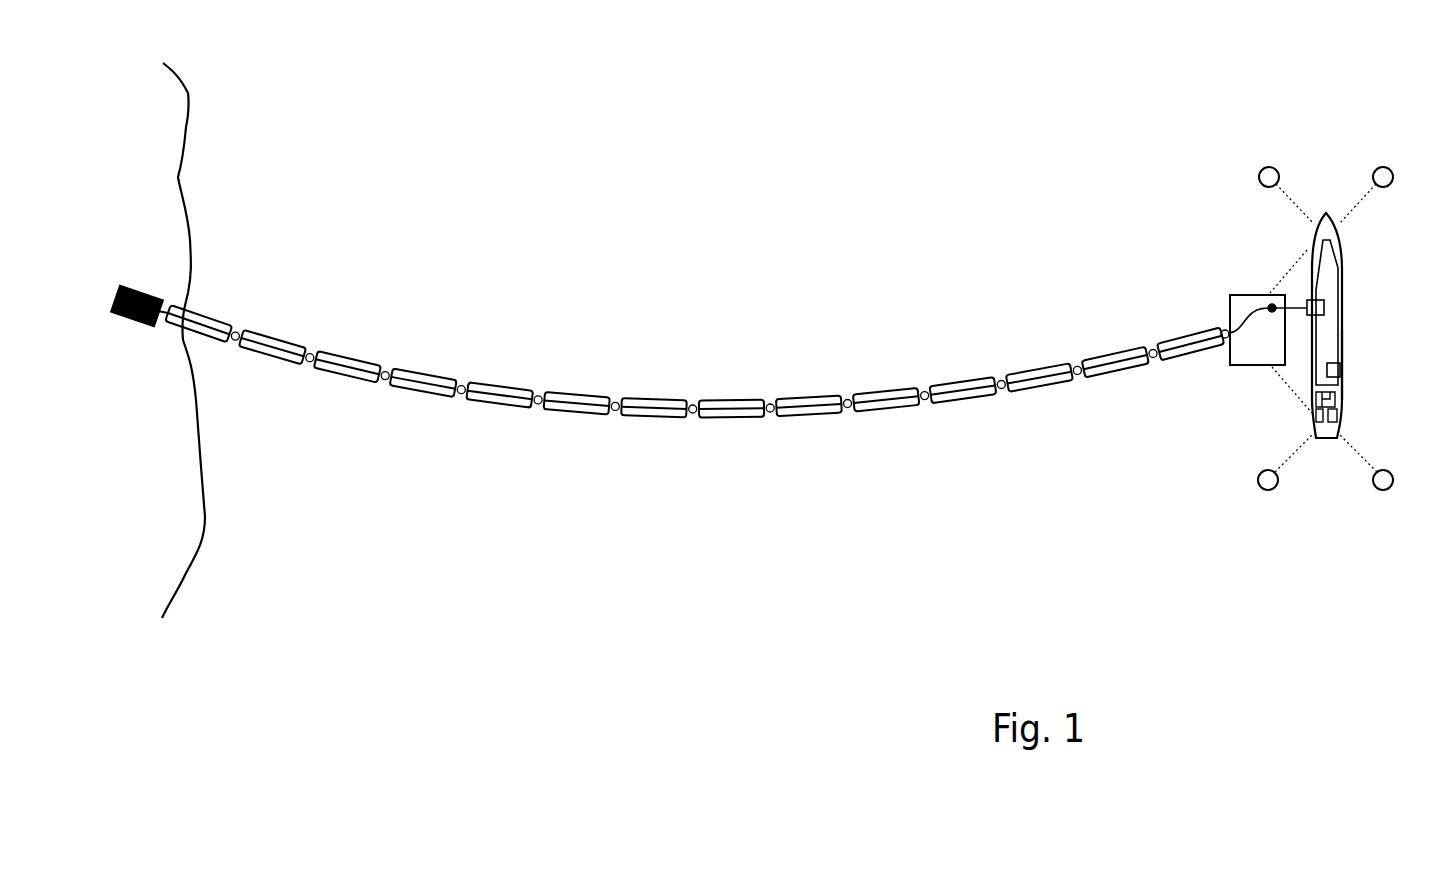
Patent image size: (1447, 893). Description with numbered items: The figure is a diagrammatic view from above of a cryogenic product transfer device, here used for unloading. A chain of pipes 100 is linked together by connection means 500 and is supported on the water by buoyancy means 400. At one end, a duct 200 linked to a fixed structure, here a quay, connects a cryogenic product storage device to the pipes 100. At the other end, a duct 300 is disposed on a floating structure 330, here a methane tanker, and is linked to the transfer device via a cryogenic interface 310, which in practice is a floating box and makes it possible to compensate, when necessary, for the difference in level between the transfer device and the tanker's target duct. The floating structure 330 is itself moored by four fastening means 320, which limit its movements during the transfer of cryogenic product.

The pipes 100 is at (350, 361).
The duct 200 is at (124, 324).
The duct 300 is at (1326, 327).
The cryogenic interface 310 is at (1227, 310).
The fastening means 320 is at (1380, 174).
The floating structure 330 is at (1358, 346).
The buoyancy means 400 is at (728, 394).
The connection means 500 is at (1070, 350).